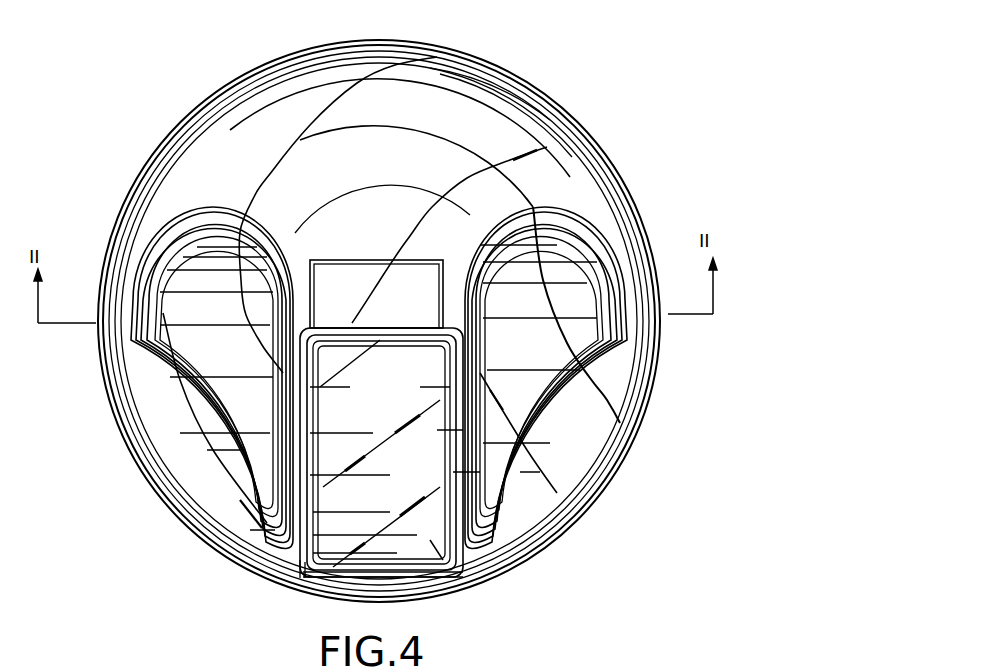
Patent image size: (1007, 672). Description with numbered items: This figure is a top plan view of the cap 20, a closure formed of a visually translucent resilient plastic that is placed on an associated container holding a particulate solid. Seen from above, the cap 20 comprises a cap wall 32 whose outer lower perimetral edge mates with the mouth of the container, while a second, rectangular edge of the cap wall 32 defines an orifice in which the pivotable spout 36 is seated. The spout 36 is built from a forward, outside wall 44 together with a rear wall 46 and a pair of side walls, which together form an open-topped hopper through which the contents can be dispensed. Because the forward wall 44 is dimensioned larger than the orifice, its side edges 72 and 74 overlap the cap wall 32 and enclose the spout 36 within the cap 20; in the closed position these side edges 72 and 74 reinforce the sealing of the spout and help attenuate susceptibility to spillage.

The cap 20 is at (568, 88).
The cap wall 32 is at (160, 223).
The spout 36 is at (388, 517).
The forward outside wall 44 is at (470, 597).
The rear wall 46 is at (393, 277).
The side edge 72 is at (483, 570).
The side edge 74 is at (307, 596).